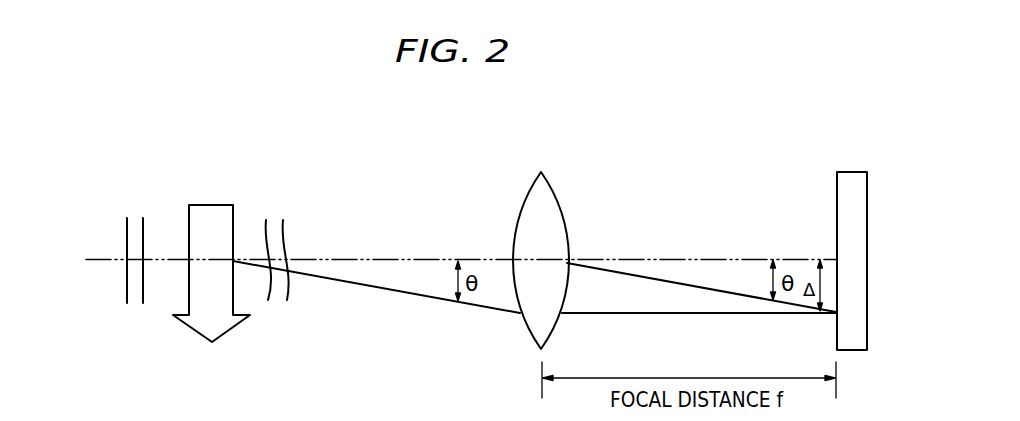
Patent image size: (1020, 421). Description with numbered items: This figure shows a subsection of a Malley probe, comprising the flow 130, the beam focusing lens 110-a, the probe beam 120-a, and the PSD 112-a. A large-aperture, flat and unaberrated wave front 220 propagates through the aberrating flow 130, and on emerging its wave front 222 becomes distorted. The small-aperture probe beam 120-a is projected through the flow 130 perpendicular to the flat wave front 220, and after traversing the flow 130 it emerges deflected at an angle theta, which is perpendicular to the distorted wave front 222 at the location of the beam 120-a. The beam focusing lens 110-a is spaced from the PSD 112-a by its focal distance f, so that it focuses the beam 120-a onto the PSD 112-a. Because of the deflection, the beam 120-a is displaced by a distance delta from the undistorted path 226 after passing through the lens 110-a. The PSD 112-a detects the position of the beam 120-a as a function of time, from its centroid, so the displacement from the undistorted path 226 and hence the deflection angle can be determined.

The flat wave front 220 is at (126, 232).
The flow 130 is at (203, 205).
The distorted wave front 222 is at (284, 220).
The beam focusing lens 110-a is at (527, 198).
The PSD 112-a is at (837, 188).
The undistorted path 226 is at (586, 258).
The beam 120-a is at (161, 262).